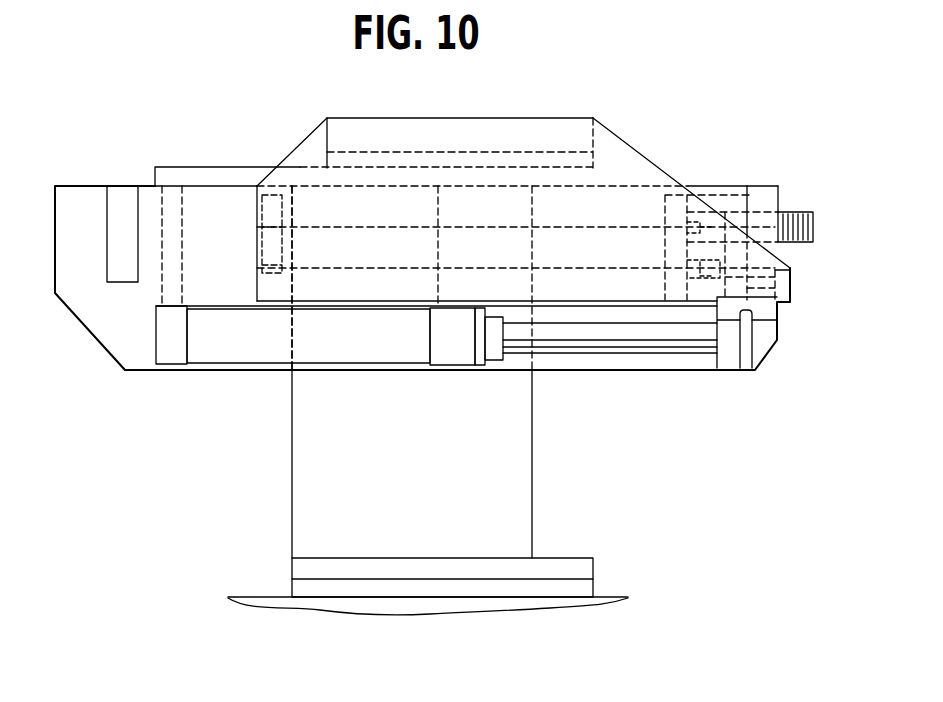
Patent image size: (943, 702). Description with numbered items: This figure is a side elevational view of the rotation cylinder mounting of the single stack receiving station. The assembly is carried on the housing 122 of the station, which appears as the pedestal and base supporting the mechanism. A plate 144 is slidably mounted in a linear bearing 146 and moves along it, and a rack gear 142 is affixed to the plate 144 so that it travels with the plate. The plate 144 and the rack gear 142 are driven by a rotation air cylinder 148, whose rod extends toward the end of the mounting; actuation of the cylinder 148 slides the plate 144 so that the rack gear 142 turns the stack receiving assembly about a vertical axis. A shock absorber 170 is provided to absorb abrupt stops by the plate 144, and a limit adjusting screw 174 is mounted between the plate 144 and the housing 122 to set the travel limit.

The housing 122 is at (305, 512).
The rack gear 142 is at (553, 118).
The plate 144 is at (302, 147).
The linear bearing 146 is at (326, 248).
The rotation air cylinder 148 is at (198, 348).
The shock absorber 170 is at (798, 208).
The limit adjusting screw 174 is at (790, 270).